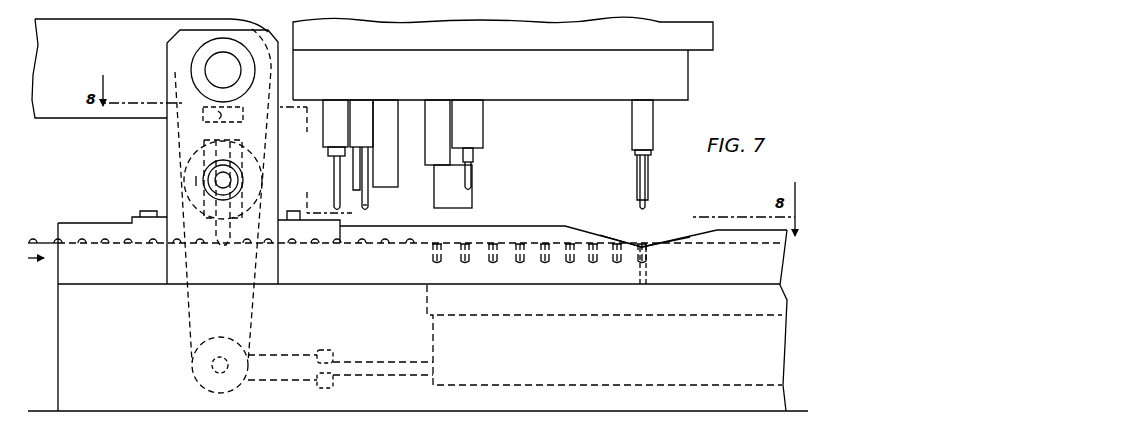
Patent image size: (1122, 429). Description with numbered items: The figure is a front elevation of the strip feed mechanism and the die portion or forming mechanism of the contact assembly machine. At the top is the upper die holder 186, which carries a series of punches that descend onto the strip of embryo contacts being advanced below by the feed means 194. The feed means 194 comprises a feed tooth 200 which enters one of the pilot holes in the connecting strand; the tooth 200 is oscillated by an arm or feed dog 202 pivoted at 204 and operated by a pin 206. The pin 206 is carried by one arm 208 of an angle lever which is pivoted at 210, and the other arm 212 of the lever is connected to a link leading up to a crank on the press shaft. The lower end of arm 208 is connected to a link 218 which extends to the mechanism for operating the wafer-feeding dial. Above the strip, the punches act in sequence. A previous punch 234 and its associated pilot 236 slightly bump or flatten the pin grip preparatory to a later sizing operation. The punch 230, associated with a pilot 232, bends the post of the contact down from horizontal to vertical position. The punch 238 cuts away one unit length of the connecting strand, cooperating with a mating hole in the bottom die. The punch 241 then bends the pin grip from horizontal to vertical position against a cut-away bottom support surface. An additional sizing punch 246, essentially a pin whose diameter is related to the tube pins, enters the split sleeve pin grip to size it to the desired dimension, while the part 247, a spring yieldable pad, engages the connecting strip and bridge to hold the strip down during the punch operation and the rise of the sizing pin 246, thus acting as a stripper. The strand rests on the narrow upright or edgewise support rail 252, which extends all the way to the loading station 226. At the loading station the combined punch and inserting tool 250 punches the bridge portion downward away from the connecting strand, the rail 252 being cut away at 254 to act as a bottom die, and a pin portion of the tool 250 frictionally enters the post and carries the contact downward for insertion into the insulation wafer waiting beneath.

The upper die holder 186 is at (706, 43).
The feed means 194 is at (190, 182).
The feed tooth 200 is at (221, 247).
The feed dog 202 is at (259, 157).
The pivot 204 is at (232, 181).
The pin 206 is at (205, 113).
The arm of angle lever 208 is at (190, 320).
The pivot of angle lever 210 is at (210, 70).
The other arm of angle lever 212 is at (61, 110).
The link 218 is at (368, 362).
The loading station 226 is at (643, 246).
The punch 230 is at (369, 200).
The pilot 232 is at (366, 212).
The previous punch 234 is at (332, 158).
The pilot 236 is at (336, 183).
The punch 238 is at (396, 186).
The punch 241 is at (432, 147).
The sizing punch 246 is at (474, 178).
The spring yieldable pad 247 is at (476, 202).
The combined punch and inserting tool 250 is at (650, 184).
The support rail 252 is at (477, 258).
The cut-away of guide rail 254 is at (650, 260).